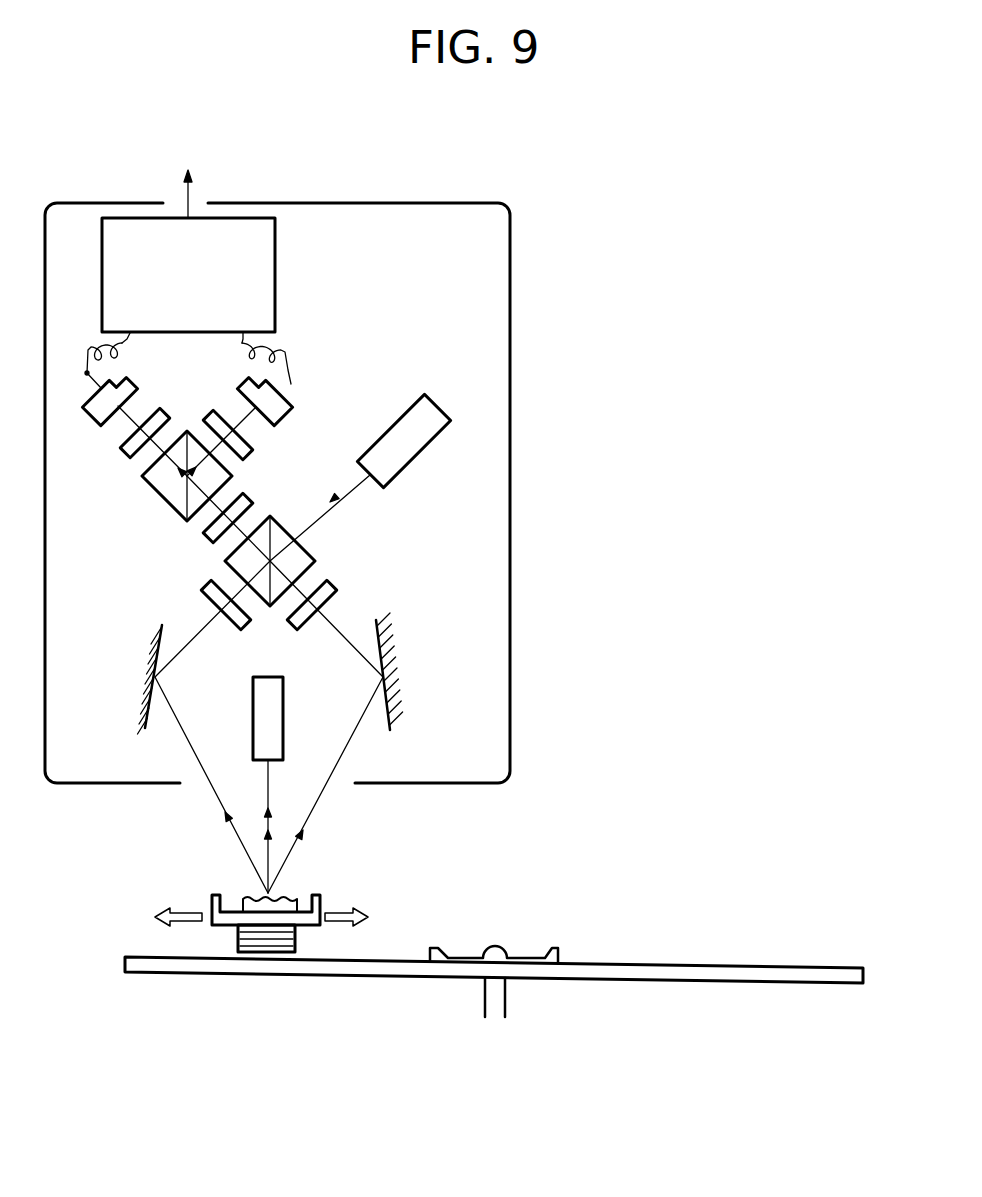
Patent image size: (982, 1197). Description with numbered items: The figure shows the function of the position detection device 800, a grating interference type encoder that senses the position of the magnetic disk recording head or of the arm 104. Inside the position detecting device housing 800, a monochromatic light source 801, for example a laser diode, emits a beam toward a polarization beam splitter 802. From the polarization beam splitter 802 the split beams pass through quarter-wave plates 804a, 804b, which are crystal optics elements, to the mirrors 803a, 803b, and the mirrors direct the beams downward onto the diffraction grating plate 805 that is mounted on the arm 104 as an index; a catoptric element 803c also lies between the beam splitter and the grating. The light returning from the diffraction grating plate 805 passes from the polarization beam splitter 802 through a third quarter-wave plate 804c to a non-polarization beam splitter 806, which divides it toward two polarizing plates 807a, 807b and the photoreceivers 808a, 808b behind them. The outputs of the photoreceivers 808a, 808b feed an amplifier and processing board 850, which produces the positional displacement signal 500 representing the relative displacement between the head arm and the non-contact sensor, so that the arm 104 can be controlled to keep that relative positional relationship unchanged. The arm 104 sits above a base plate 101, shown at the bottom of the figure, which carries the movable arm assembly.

The base plate 101 is at (125, 965).
The arm 104 is at (323, 903).
The positional displacement signal 500 is at (222, 193).
The position detection device 800 is at (510, 481).
The monochromatic light source 801 is at (417, 463).
The polarization beam splitter 802 is at (312, 552).
The mirror 803a is at (128, 707).
The mirror 803b is at (405, 700).
The catoptric element 803c is at (283, 735).
The quarter-wave plate 804a is at (205, 593).
The quarter-wave plate 804b is at (337, 583).
The quarter-wave plate 804c is at (205, 536).
The diffraction grating plate 805 is at (283, 897).
The non-polarization beam splitter 806 is at (167, 498).
The polarizing plate 807a is at (120, 450).
The polarizing plate 807b is at (252, 450).
The photoreceiver 808a is at (137, 393).
The photoreceiver 808b is at (288, 402).
The amplifier and processing board 850 is at (275, 281).